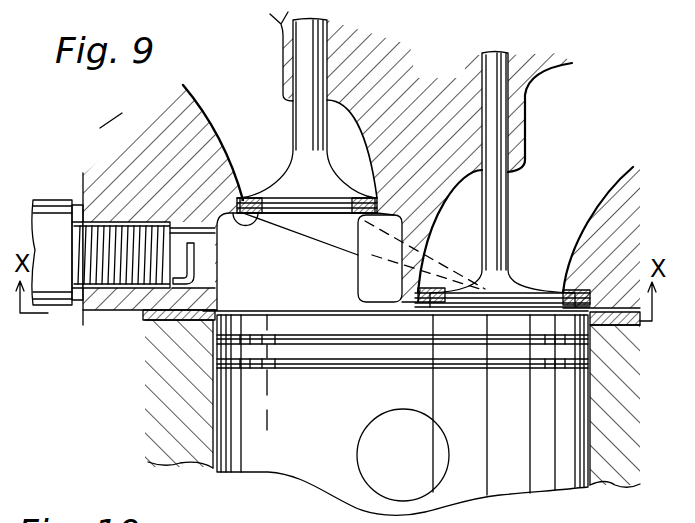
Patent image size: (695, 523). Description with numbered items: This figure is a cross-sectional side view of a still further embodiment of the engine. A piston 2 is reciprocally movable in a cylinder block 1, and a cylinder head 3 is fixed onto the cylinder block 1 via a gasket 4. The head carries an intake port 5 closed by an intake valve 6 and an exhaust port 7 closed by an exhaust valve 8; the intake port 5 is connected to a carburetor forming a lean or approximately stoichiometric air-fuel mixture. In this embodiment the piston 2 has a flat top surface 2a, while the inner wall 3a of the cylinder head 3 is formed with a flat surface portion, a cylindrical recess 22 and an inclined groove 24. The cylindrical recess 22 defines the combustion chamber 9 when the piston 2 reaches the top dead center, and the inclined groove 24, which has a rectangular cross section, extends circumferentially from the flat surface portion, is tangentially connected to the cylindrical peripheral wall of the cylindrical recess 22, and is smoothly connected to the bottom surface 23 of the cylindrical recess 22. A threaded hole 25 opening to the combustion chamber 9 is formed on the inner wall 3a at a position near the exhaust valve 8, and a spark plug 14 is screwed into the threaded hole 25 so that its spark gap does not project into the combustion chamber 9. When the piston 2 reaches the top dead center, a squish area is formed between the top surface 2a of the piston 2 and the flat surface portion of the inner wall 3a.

The cylinder block 1 is at (625, 413).
The piston 2 is at (545, 462).
The top surface of the piston 2a is at (290, 316).
The cylinder head 3 is at (603, 256).
The inner wall of the cylinder head 3a is at (410, 305).
The gasket 4 is at (633, 327).
The intake port 5 is at (558, 198).
The intake valve 6 is at (490, 134).
The exhaust port 7 is at (242, 115).
The exhaust valve 8 is at (306, 46).
The combustion chamber 9 is at (306, 277).
The spark plug 14 is at (50, 226).
The cylindrical recess 22 is at (398, 248).
The bottom surface of the cylindrical recess 23 is at (250, 214).
The inclined groove 24 is at (337, 232).
The threaded hole 25 is at (203, 226).